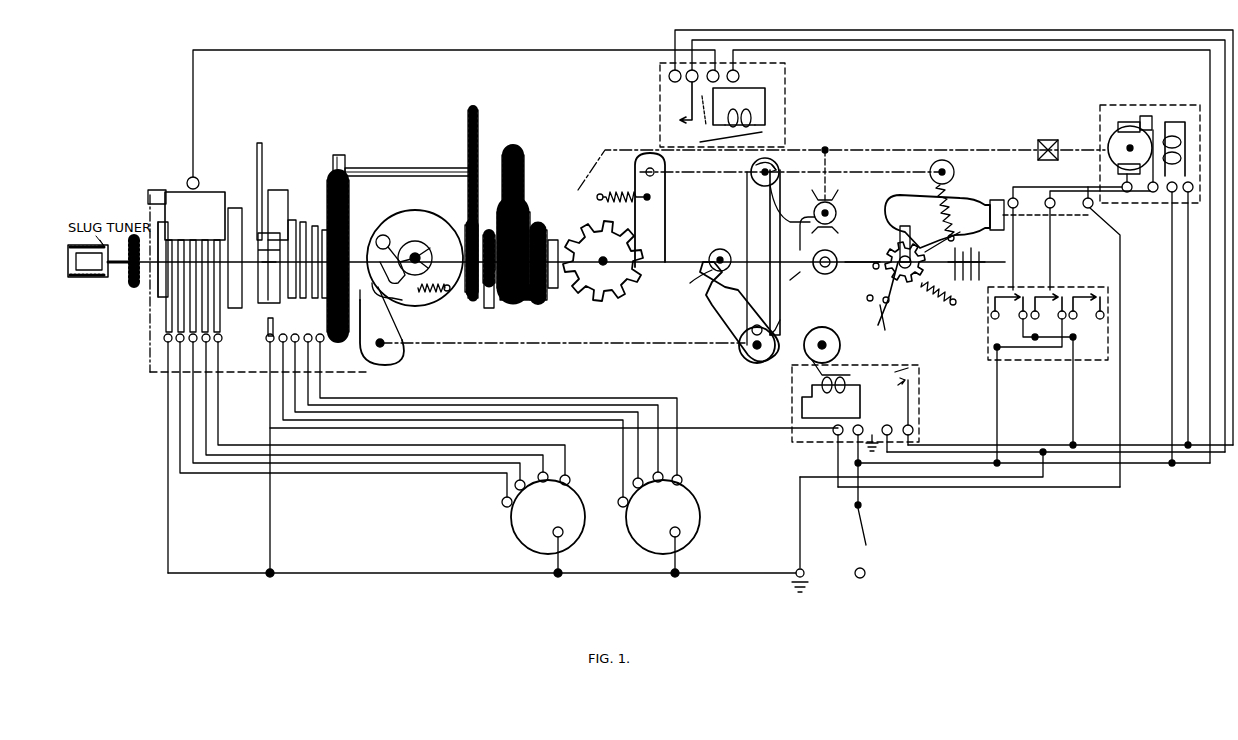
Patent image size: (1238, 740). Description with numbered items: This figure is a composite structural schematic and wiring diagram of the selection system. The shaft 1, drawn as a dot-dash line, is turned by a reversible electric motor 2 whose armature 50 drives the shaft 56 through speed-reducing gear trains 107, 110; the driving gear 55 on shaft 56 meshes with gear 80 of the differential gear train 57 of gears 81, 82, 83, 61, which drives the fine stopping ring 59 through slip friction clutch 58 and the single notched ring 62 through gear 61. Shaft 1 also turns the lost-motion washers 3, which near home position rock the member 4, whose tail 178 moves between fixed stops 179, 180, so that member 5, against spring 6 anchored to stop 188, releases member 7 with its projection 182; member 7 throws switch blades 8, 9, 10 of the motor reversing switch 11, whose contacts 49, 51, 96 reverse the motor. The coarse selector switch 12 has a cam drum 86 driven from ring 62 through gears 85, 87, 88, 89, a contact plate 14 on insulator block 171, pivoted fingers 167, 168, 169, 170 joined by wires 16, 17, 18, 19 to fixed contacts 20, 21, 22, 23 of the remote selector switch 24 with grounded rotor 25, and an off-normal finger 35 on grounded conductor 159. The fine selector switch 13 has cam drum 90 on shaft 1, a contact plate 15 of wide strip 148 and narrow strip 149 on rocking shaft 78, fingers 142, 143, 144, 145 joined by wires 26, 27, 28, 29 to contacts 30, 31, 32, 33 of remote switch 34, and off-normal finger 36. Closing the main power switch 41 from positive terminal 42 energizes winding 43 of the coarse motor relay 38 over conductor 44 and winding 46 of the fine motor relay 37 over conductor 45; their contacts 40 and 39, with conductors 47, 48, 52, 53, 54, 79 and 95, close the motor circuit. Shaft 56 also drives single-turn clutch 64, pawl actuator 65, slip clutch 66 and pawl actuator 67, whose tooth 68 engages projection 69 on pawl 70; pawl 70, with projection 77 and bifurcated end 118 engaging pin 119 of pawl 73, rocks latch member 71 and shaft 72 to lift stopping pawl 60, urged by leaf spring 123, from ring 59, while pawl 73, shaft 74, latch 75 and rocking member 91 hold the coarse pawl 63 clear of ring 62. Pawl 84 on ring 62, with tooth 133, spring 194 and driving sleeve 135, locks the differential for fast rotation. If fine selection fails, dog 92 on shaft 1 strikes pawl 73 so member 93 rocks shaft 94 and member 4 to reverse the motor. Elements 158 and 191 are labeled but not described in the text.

The shaft 1 is at (645, 278).
The reversible electric motor 2 is at (1162, 105).
The lost-motion coupling washers 3 is at (966, 273).
The rockable member 4 is at (918, 278).
The member 5 is at (930, 237).
The spring 6 is at (936, 294).
The member 7 is at (914, 197).
The switch blade 8 is at (1015, 238).
The switch blade 9 is at (1052, 238).
The switch blade 10 is at (1090, 238).
The motor reversing switch 11 is at (1085, 360).
The coarse selector switch 12 is at (314, 185).
The fine selector switch 13 is at (222, 165).
The contact plate 14 is at (270, 181).
The contact plate 15 is at (183, 186).
The wire 16 is at (468, 398).
The wire 17 is at (483, 405).
The wire 18 is at (495, 412).
The wire 19 is at (508, 420).
The fixed contact 20 is at (682, 480).
The fixed contact 21 is at (660, 472).
The fixed contact 22 is at (640, 478).
The fixed contact 23 is at (620, 497).
The remote selector switch 24 is at (707, 518).
The rotatable contact plate 25 is at (694, 500).
The wire 26 is at (313, 447).
The wire 27 is at (337, 458).
The wire 28 is at (365, 468).
The wire 29 is at (393, 477).
The fixed contact 30 is at (570, 480).
The fixed contact 31 is at (545, 473).
The fixed contact 32 is at (530, 475).
The fixed contact 33 is at (502, 503).
The remote selector switch 34 is at (507, 538).
The off-normal finger 35 is at (268, 326).
The contact finger 36 is at (168, 322).
The fine motor relay 37 is at (786, 92).
The coarse motor relay 38 is at (923, 395).
The relay contacts 39 is at (692, 111).
The relay contacts 40 is at (895, 396).
The main power switch 41 is at (855, 522).
The positive power terminal 42 is at (866, 574).
The relay winding 43 is at (806, 402).
The conductor 44 is at (733, 428).
The conductor 45 is at (1197, 466).
The relay winding 46 is at (752, 110).
The conductor 47 is at (1025, 445).
The conductor 48 is at (1073, 408).
The reverse switch contact 49 is at (1022, 305).
The motor armature 50 is at (1130, 149).
The reverse switch contact 51 is at (1062, 290).
The conductor 52 is at (997, 383).
The wire 53 is at (1225, 390).
The wire 54 is at (1225, 256).
The driving gear 55 is at (514, 152).
The shaft 56 is at (880, 150).
The differential gear train 57 is at (528, 333).
The slip friction clutch 58 is at (586, 232).
The fine toothed stopping ring 59 is at (622, 225).
The stopping pawl 60 is at (666, 215).
The gear 61 is at (498, 236).
The single notched ring 62 is at (440, 205).
The pivoted pawl 63 is at (415, 325).
The single-turn clutch 64 is at (842, 197).
The pawl actuator 65 is at (838, 215).
The slip friction clutch 66 is at (840, 235).
The pawl actuator 67 is at (838, 266).
The tooth 68 is at (815, 278).
The projection 69 is at (802, 233).
The pawl 70 is at (781, 308).
The latch member 71 is at (752, 178).
The shaft 72 is at (722, 172).
The pawl 73 is at (757, 363).
The shaft 74 is at (692, 343).
The latch 75 is at (840, 345).
The projection 77 is at (807, 220).
The rocking shaft 78 is at (148, 196).
The conductor 79 is at (936, 488).
The gear 80 is at (503, 212).
The gear 81 is at (541, 232).
The gear 82 is at (553, 292).
The gear 83 is at (490, 308).
The pawl 84 is at (395, 300).
The gear 85 is at (470, 295).
The cam drum 86 is at (303, 228).
The gear 87 is at (468, 133).
The gear 88 is at (346, 158).
The gear 89 is at (350, 205).
The cam drum 90 is at (158, 288).
The rocking member 91 is at (955, 172).
The dog 92 is at (726, 250).
The member 93 is at (702, 288).
The shaft 94 is at (845, 285).
The conductor 95 is at (1092, 488).
The contact 96 is at (1090, 290).
The speed-reducing gear train 107 is at (1052, 130).
The speed-reducing gear train 110 is at (1053, 123).
The bifurcated end 118 is at (786, 328).
The pin 119 is at (745, 348).
The leaf spring 123 is at (612, 188).
The tooth 133 is at (386, 236).
The driving sleeve 135 is at (430, 232).
The contact finger 142 is at (220, 330).
The contact finger 143 is at (210, 342).
The contact finger 144 is at (204, 342).
The contact finger 145 is at (176, 340).
The wide flexible metal strip 148 is at (195, 216).
The narrow flexible metal strip 149 is at (167, 205).
The conductor 158 is at (456, 50).
The grounded conductor 159 is at (228, 573).
The pivoted finger 167 is at (350, 335).
The pivoted finger 168 is at (358, 350).
The pivoted finger 169 is at (294, 342).
The pivoted finger 170 is at (282, 342).
The insulator block 171 is at (290, 180).
The tail portion 178 is at (895, 310).
The fixed stop 179 is at (867, 301).
The fixed stop 180 is at (887, 332).
The projection 182 is at (990, 232).
The fixed stop 188 is at (955, 306).
The pin 191 is at (877, 272).
The spring 194 is at (440, 295).